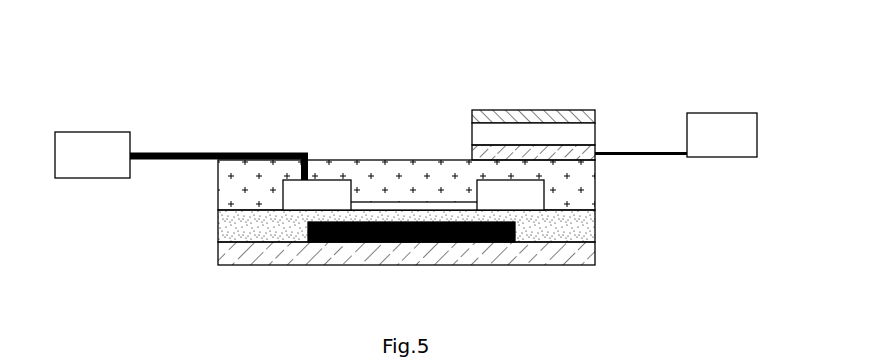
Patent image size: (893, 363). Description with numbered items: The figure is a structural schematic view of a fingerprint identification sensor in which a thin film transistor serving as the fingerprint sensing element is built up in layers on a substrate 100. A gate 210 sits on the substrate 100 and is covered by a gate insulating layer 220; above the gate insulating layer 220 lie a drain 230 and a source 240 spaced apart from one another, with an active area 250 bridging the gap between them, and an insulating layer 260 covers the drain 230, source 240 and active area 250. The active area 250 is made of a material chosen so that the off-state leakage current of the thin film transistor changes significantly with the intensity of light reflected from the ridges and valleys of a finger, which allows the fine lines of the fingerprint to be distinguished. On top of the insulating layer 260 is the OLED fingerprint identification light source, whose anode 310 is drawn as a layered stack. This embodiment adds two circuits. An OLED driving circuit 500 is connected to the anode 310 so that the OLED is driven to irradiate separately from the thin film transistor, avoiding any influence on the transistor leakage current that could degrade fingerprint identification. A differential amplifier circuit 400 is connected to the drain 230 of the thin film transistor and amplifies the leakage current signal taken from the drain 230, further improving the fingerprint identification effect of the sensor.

The substrate 100 is at (597, 243).
The gate 210 is at (388, 242).
The gate insulating layer 220 is at (597, 212).
The drain 230 is at (317, 195).
The source 240 is at (510, 195).
The active area 250 is at (367, 202).
The insulating layer 260 is at (597, 192).
The anode 310 is at (472, 151).
The differential amplifier circuit 400 is at (180, 156).
The OLED driving circuit 500 is at (676, 135).